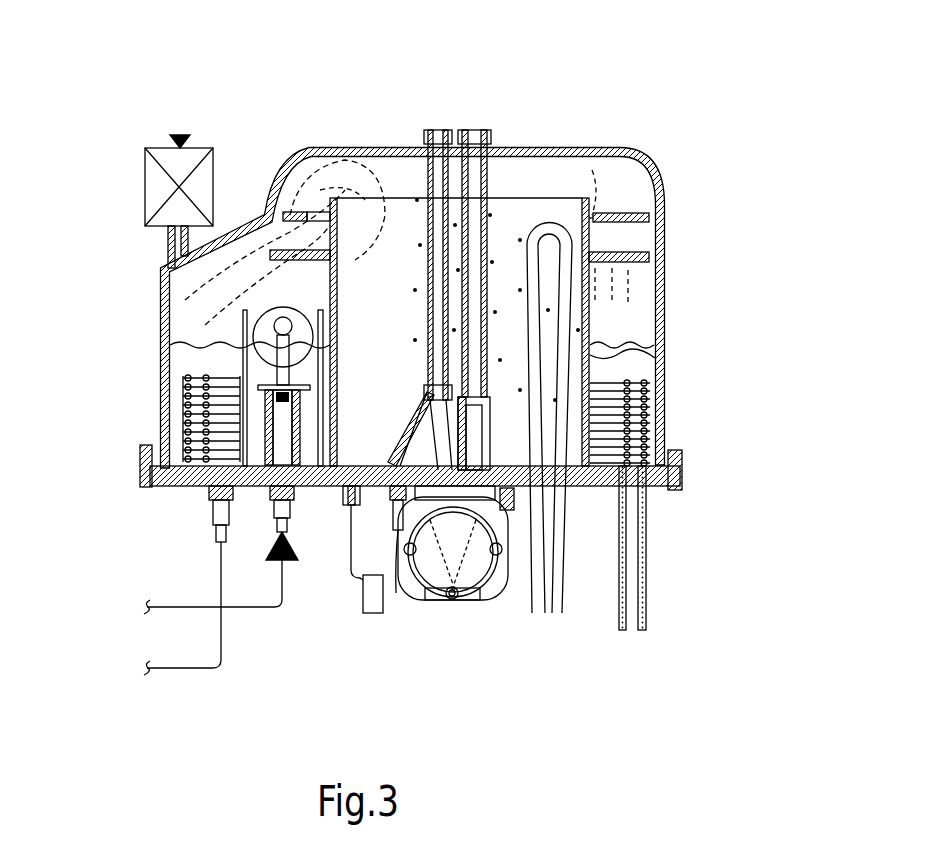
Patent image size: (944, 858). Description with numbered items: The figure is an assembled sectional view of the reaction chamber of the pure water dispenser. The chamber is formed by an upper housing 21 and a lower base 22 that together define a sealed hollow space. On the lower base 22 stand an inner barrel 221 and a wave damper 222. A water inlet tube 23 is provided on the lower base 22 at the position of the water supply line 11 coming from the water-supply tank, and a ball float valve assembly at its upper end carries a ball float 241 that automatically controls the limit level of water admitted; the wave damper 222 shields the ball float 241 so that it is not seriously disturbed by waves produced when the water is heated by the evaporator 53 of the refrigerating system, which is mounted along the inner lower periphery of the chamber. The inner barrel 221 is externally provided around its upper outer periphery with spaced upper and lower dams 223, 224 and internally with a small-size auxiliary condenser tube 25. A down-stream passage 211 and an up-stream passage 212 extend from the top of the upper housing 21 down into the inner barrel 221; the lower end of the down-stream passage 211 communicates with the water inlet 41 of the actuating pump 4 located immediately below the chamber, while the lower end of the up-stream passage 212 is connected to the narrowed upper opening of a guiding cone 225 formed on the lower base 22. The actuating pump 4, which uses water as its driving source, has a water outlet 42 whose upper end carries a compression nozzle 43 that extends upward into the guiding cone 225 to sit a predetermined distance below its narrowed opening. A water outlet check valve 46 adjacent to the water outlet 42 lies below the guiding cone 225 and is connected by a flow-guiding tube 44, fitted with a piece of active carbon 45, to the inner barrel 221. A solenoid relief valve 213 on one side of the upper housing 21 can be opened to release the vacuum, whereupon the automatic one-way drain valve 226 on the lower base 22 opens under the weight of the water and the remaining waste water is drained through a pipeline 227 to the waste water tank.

The actuating pump 4 is at (480, 592).
The water supply line 11 is at (185, 607).
The upper housing 21 is at (662, 300).
The lower base 22 is at (685, 480).
The water inlet tube 23 is at (288, 395).
The auxiliary condenser tube 25 is at (560, 350).
The water inlet 41 is at (500, 518).
The water outlet 42 is at (454, 602).
The compression nozzle 43 is at (440, 420).
The flow-guiding tube 44 is at (360, 583).
The active carbon 45 is at (377, 605).
The water outlet check valve 46 is at (412, 595).
The evaporator 53 is at (640, 392).
The down-stream passage 211 is at (472, 135).
The up-stream passage 212 is at (440, 138).
The solenoid relief valve 213 is at (198, 152).
The inner barrel 221 is at (335, 278).
The wave damper 222 is at (280, 340).
The upper dam 223 is at (660, 222).
The lower dam 224 is at (655, 262).
The guiding cone 225 is at (345, 500).
The automatic one-way drain valve 226 is at (213, 490).
The pipeline 227 is at (190, 668).
The ball float 241 is at (250, 312).